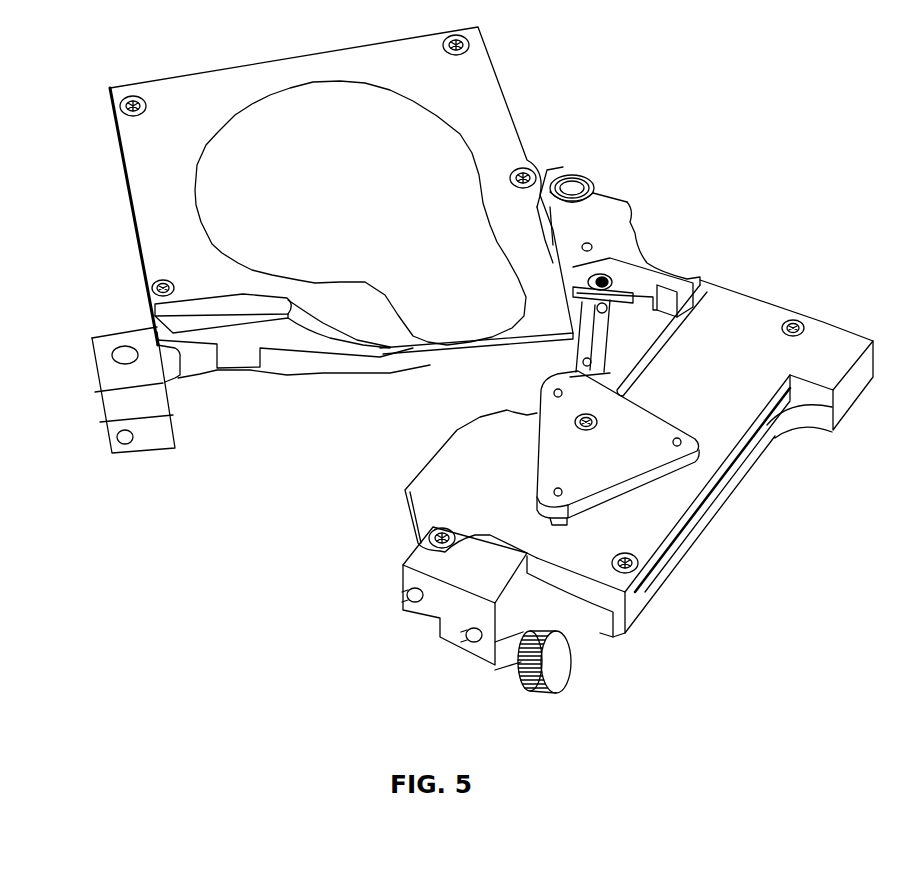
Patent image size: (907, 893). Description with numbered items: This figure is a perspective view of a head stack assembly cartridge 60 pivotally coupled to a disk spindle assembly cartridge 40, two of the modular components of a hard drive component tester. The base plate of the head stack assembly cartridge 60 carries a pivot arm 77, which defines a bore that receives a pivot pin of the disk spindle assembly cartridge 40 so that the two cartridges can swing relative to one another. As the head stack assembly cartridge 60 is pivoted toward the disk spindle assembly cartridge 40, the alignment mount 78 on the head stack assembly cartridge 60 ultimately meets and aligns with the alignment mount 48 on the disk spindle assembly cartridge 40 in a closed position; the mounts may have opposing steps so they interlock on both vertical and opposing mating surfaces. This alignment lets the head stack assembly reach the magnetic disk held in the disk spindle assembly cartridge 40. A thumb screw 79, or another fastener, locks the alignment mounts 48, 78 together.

The disk spindle assembly cartridge 40 is at (261, 68).
The alignment mount 48 is at (115, 427).
The head stack assembly cartridge 60 is at (693, 530).
The pivot arm 77 is at (576, 177).
The alignment mount 78 is at (407, 585).
The thumb screw 79 is at (553, 667).